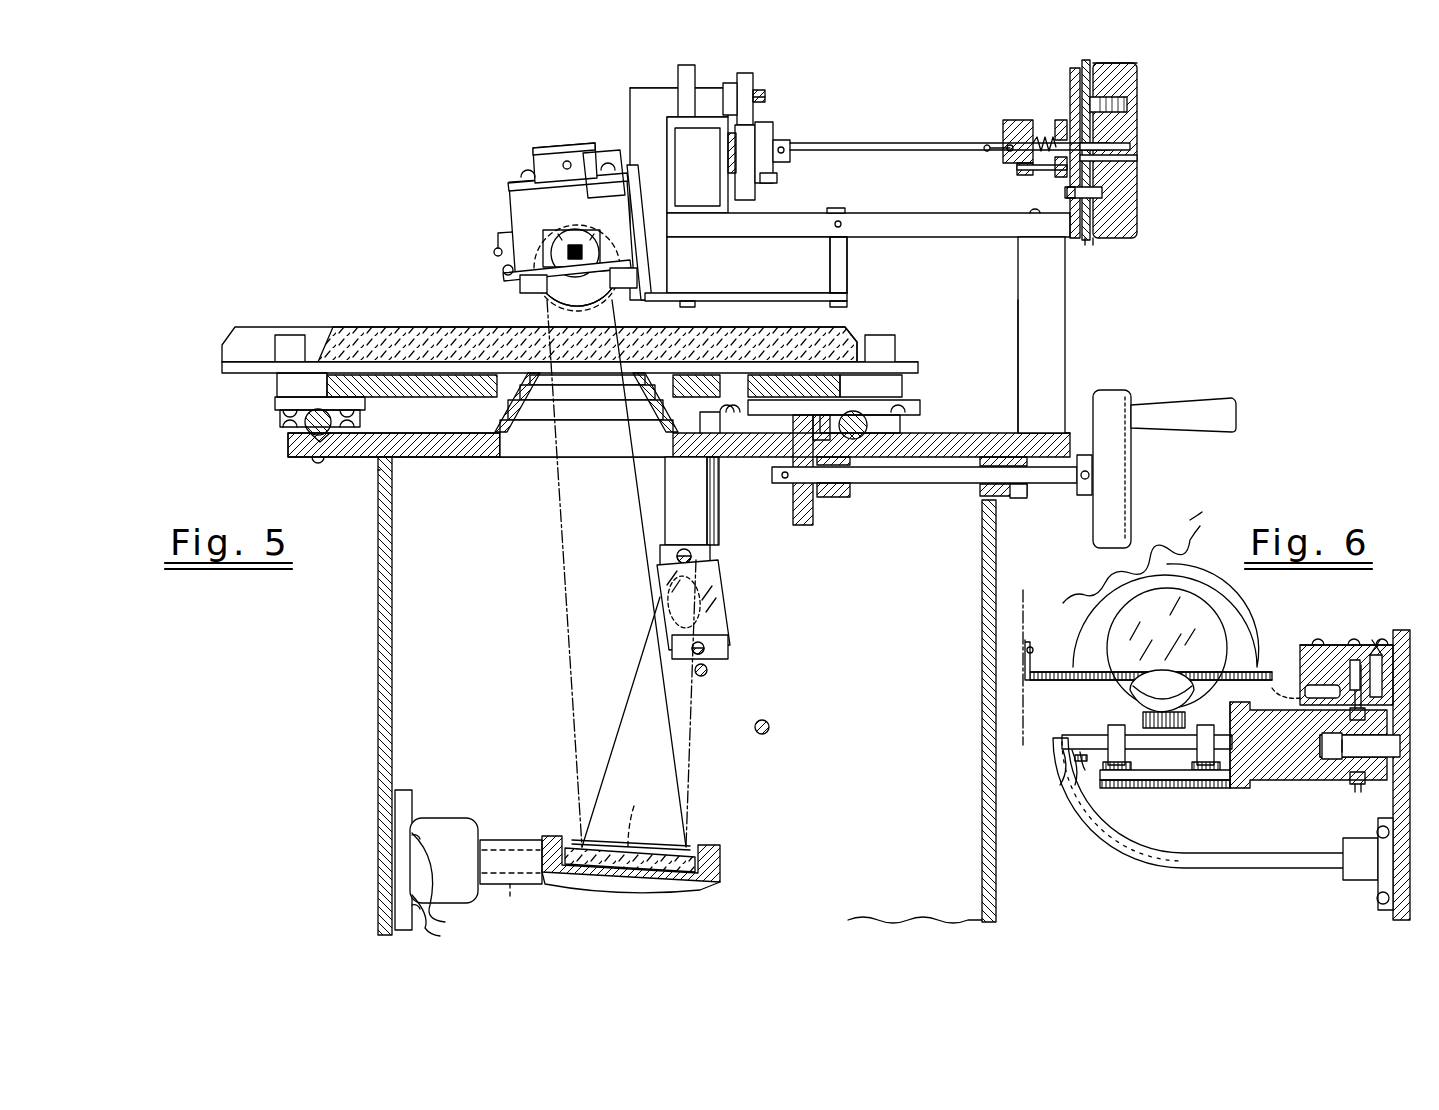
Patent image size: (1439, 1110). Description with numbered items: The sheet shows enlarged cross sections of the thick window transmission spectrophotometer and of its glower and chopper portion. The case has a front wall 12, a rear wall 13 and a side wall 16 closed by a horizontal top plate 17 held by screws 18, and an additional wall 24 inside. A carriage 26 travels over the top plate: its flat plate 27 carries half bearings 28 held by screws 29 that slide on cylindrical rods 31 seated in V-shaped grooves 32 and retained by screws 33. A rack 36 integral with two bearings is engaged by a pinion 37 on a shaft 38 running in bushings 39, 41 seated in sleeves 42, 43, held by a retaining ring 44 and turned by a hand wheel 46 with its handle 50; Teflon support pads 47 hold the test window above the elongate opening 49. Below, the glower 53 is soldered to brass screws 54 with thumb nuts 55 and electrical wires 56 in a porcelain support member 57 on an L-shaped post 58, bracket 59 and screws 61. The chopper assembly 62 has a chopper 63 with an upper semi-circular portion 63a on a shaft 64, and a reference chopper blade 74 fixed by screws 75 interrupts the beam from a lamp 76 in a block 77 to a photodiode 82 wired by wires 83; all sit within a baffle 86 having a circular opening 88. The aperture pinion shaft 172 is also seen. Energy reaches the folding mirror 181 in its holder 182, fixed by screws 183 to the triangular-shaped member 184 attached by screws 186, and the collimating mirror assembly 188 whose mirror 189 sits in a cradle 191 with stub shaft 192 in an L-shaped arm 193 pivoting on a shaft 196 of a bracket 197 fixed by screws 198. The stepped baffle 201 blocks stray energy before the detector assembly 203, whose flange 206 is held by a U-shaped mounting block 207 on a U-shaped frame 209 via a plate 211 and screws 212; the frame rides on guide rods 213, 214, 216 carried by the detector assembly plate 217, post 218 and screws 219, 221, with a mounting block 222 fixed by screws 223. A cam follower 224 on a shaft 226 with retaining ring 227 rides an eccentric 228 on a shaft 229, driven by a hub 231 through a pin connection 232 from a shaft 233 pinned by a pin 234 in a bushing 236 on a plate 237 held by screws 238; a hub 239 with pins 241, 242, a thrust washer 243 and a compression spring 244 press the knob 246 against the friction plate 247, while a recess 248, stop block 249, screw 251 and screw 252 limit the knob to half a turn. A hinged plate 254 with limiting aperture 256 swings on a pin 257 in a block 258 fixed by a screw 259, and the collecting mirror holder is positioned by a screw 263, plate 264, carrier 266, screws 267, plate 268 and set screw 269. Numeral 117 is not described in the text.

In FIG. 5, the front wall 12 is at (982, 625).
In FIG. 5, the rear wall 13 is at (378, 620).
In FIG. 5, the side wall 16 is at (504, 670).
In FIG. 5, the top plate 17 is at (305, 448).
In FIG. 5, the screws 18 is at (390, 434).
In FIG. 6, the wall 24 is at (1394, 790).
In FIG. 5, the carriage 26 is at (160, 388).
In FIG. 5, the plate 27 is at (890, 385).
In FIG. 5, the half bearings 28 is at (280, 425).
In FIG. 5, the screws 29 is at (290, 413).
In FIG. 5, the cylindrical rods 31 is at (318, 430).
In FIG. 5, the grooves 32 is at (330, 430).
In FIG. 5, the screws 33 is at (318, 462).
In FIG. 5, the rack 36 is at (792, 432).
In FIG. 5, the pinion 37 is at (803, 526).
In FIG. 5, the shaft 38 is at (935, 475).
In FIG. 5, the bushing 39 is at (815, 497).
In FIG. 5, the bushing 41 is at (1010, 494).
In FIG. 5, the sleeve 42 is at (840, 498).
In FIG. 5, the sleeve 43 is at (1008, 500).
In FIG. 5, the retaining ring 44 is at (1082, 485).
In FIG. 5, the hand wheel 46 is at (1110, 392).
In FIG. 5, the support pads 47 is at (255, 368).
In FIG. 5, the elongate opening 49 is at (528, 340).
In FIG. 5, the handle 50 is at (1200, 405).
In FIG. 6, the glower 53 is at (1148, 712).
In FIG. 6, the brass screws 54 is at (1110, 732).
In FIG. 6, the thumb nuts 55 is at (1195, 768).
In FIG. 6, the electrical wires 56 is at (1082, 788).
In FIG. 6, the porcelain support member 57 is at (1090, 740).
In FIG. 6, the L-shaped post 58 is at (1140, 858).
In FIG. 6, the bracket 59 is at (1350, 880).
In FIG. 6, the screws 61 is at (1376, 832).
In FIG. 6, the chopper assembly 62 is at (1289, 821).
In FIG. 6, the chopper 63 is at (1250, 790).
In FIG. 6, the upper semi-circular portion 63a is at (1180, 790).
In FIG. 6, the shaft 64 is at (1345, 760).
In FIG. 6, the chopper blade 74 is at (1346, 660).
In FIG. 6, the screws 75 is at (1363, 712).
In FIG. 6, the lamp 76 is at (1393, 645).
In FIG. 6, the block 77 is at (1325, 645).
In FIG. 6, the photodiode 82 is at (1312, 688).
In FIG. 6, the wires 83 is at (1290, 697).
In FIG. 6, the baffle 86 is at (1068, 672).
In FIG. 6, the circular opening 88 is at (1135, 690).
In FIG. 5, the lamp 117 is at (770, 727).
In FIG. 5, the shaft 172 is at (706, 673).
In FIG. 5, the first surface reflecting mirror 181 is at (712, 615).
In FIG. 5, the holder 182 is at (716, 660).
In FIG. 5, the screws 183 is at (686, 548).
In FIG. 5, the triangular-shaped member 184 is at (698, 491).
In FIG. 5, the screws 186 is at (700, 428).
In FIG. 5, the collimating mirror assembly 188 is at (580, 850).
In FIG. 5, the first surface reflecting mirror 189 is at (662, 858).
In FIG. 5, the cradle 191 is at (665, 882).
In FIG. 5, the stub shaft 192 is at (633, 816).
In FIG. 5, the L-shaped arm 193 is at (512, 852).
In FIG. 5, the shaft 196 is at (510, 884).
In FIG. 5, the bracket 197 is at (452, 828).
In FIG. 5, the screws 198 is at (425, 925).
In FIG. 5, the baffle 201 is at (505, 408).
In FIG. 5, the detector assembly 203 is at (438, 208).
In FIG. 5, the flange 206 is at (610, 300).
In FIG. 5, the U-shaped mounting block 207 is at (515, 225).
In FIG. 5, the U-shaped frame 209 is at (655, 100).
In FIG. 5, the plate 211 is at (640, 185).
In FIG. 5, the screws 212 is at (652, 205).
In FIG. 5, the first guide rod 213 is at (690, 268).
In FIG. 5, the second guide rod 214 is at (845, 260).
In FIG. 5, the third guide rod 216 is at (696, 72).
In FIG. 5, the detector assembly plate 217 is at (968, 226).
In FIG. 5, the post 218 is at (1020, 340).
In FIG. 5, the screws 219 is at (1030, 212).
In FIG. 5, the screws 221 is at (1040, 430).
In FIG. 5, the mounting block 222 is at (715, 214).
In FIG. 5, the screws 223 is at (720, 238).
In FIG. 5, the cam follower 224 is at (752, 78).
In FIG. 5, the shaft 226 is at (766, 100).
In FIG. 5, the retaining ring 227 is at (765, 95).
In FIG. 5, the eccentric 228 is at (760, 195).
In FIG. 5, the shaft 229 is at (730, 160).
In FIG. 5, the hub 231 is at (765, 125).
In FIG. 5, the pin connection 232 is at (778, 175).
In FIG. 5, the shaft 233 is at (928, 143).
In FIG. 5, the pin 234 is at (788, 148).
In FIG. 5, the bushing 236 is at (1090, 137).
In FIG. 5, the plate 237 is at (1072, 82).
In FIG. 5, the screws 238 is at (1085, 246).
In FIG. 5, the hub 239 is at (1015, 125).
In FIG. 5, the pin 241 is at (992, 148).
In FIG. 5, the pin 242 is at (1043, 172).
In FIG. 5, the thrust washer 243 is at (1060, 135).
In FIG. 5, the compression spring 244 is at (1040, 140).
In FIG. 5, the knob 246 is at (1135, 222).
In FIG. 5, the friction plate 247 is at (1086, 68).
In FIG. 5, the recess 248 is at (1130, 88).
In FIG. 5, the block 249 is at (1132, 160).
In FIG. 5, the screw 251 is at (1103, 192).
In FIG. 5, the screw 252 is at (1128, 104).
In FIG. 5, the plate 254 is at (577, 268).
In FIG. 5, the limiting aperture 256 is at (583, 266).
In FIG. 5, the pin 257 is at (503, 270).
In FIG. 5, the block 258 is at (512, 248).
In FIG. 5, the screw 259 is at (494, 254).
In FIG. 5, the screw 263 is at (565, 145).
In FIG. 5, the plate 264 is at (545, 142).
In FIG. 5, the carrier 266 is at (585, 175).
In FIG. 5, the screws 267 is at (610, 170).
In FIG. 5, the plate 268 is at (520, 195).
In FIG. 5, the set screw 269 is at (562, 165).